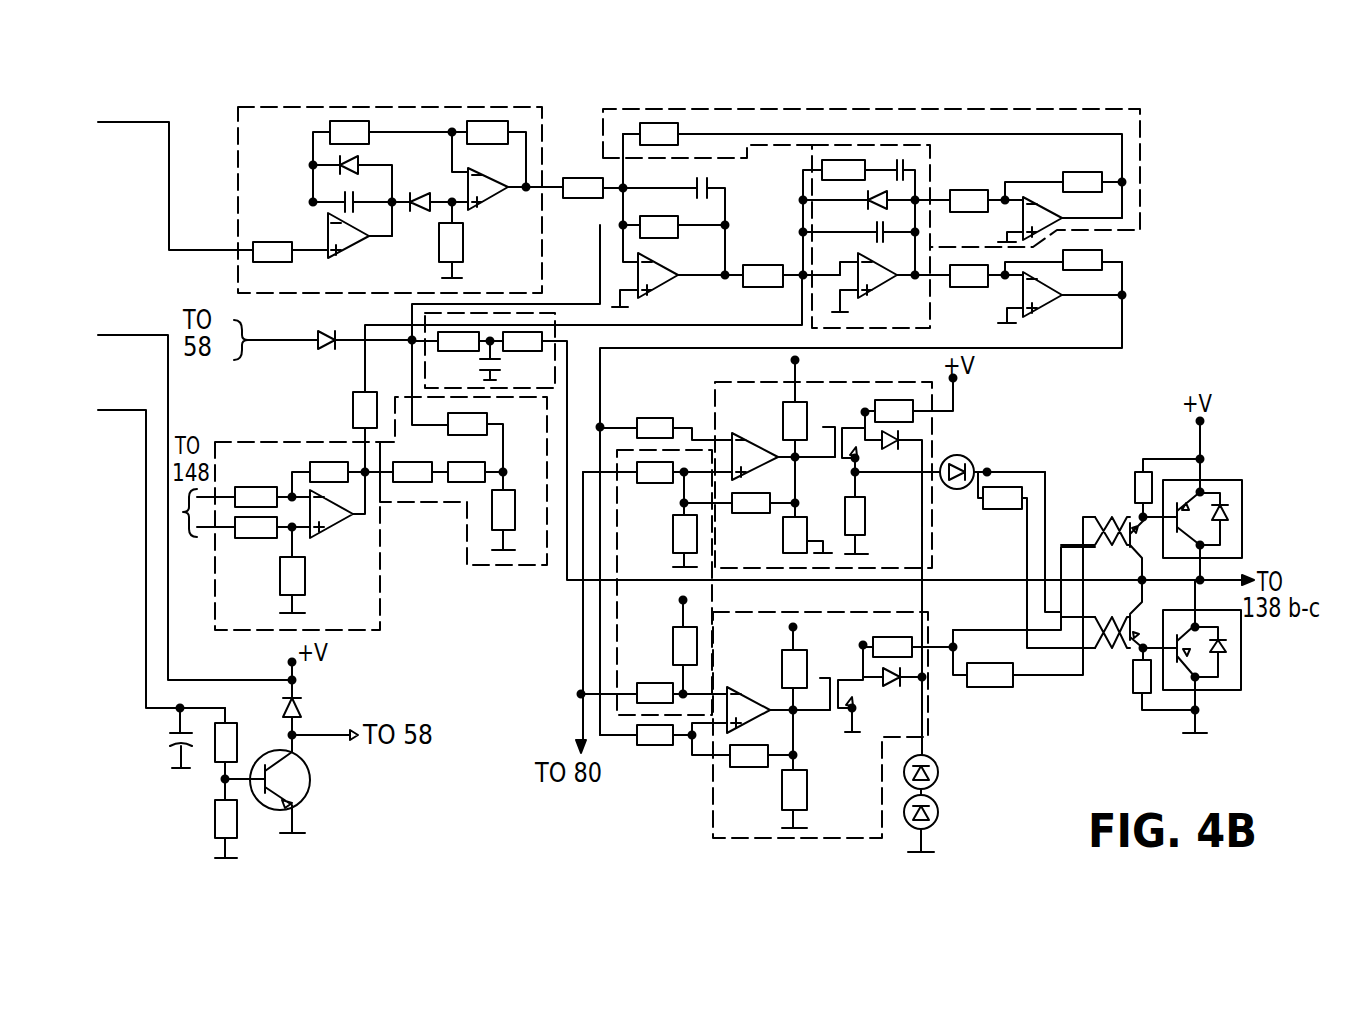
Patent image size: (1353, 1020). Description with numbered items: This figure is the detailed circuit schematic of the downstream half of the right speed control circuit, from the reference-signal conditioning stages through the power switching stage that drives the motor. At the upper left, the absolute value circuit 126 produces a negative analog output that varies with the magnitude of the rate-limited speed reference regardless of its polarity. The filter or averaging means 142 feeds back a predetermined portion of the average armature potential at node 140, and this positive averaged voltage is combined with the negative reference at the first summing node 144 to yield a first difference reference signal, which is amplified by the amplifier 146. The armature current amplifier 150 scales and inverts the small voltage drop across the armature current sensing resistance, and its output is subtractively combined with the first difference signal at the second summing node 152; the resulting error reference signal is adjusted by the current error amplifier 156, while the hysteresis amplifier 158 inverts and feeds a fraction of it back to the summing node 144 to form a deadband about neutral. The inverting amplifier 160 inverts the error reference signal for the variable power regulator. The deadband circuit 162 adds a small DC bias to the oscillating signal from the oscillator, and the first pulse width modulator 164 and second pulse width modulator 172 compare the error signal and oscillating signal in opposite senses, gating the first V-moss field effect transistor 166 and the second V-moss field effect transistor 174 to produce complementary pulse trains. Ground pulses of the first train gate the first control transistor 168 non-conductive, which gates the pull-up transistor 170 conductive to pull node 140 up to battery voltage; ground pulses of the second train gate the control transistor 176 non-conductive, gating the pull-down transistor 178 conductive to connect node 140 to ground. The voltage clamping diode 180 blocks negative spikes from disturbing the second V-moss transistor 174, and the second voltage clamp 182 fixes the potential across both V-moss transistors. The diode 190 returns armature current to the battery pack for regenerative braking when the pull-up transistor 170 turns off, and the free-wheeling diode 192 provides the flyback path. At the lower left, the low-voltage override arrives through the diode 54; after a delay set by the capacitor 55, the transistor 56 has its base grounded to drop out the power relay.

The absolute value circuit 126 is at (238, 155).
The diode 54 is at (318, 338).
The capacitor 55 is at (160, 758).
The transistor 56 is at (310, 790).
The filter or averaging means 142 is at (542, 313).
The first subtractive combining means or summing node 144 is at (610, 222).
The amplifier 146 is at (658, 290).
The armature current amplifier 150 is at (380, 593).
The second subtractive combining means or summing node 152 is at (800, 270).
The current error amplifier 156 is at (930, 290).
The hysteresis amplifier 158 is at (781, 337).
The inverting amplifier 160 is at (1033, 313).
The deadband circuit 162 is at (624, 437).
The first pulse width modulator 164 is at (830, 725).
The first V-moss field effect transistor 166 is at (850, 690).
The first control transistor 168 is at (1104, 549).
The pull-up transistor 170 is at (1214, 486).
The second pulse width modulator 172 is at (880, 472).
The second V-moss field effect transistor 174 is at (860, 447).
The control transistor 176 is at (1128, 610).
The pull-down transistor 178 is at (1167, 663).
The voltage clamping diode 180 is at (972, 460).
The second voltage clamp 182 is at (948, 776).
The diode 190 is at (1223, 520).
The free-wheeling or flyback diode 192 is at (1228, 655).
The node 140 is at (1207, 578).